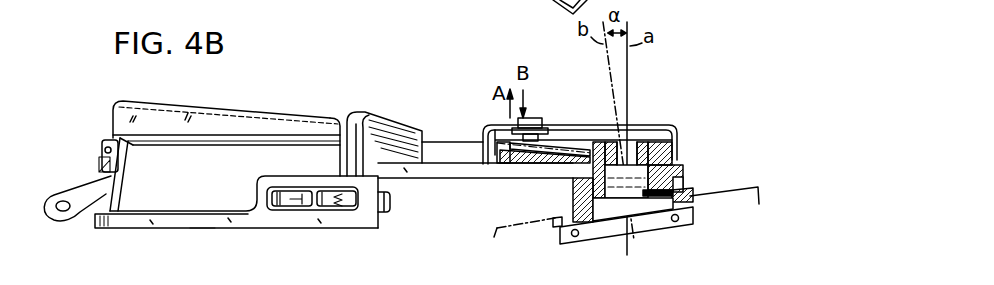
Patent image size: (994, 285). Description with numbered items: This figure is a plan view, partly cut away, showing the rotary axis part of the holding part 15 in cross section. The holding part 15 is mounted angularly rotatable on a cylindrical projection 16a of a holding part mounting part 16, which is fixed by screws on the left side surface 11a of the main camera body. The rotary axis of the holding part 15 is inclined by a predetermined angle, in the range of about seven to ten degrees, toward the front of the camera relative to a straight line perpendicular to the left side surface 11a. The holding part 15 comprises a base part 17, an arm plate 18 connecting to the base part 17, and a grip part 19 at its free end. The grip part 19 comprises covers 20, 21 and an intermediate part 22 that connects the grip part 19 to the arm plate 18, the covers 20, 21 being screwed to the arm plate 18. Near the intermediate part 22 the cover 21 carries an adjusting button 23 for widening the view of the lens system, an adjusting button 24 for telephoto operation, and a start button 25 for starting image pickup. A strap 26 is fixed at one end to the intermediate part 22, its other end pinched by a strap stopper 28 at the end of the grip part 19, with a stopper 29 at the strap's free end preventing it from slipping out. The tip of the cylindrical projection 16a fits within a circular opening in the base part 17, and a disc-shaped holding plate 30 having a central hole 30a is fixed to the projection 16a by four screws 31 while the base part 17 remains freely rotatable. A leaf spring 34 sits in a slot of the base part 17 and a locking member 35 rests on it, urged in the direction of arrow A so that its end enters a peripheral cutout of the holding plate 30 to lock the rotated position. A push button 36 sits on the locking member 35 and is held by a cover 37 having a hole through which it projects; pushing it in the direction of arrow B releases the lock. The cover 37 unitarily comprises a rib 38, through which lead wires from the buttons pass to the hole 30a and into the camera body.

The holding part 15 is at (108, 90).
The cover 20 is at (161, 146).
The strap 26 is at (262, 107).
The strap stopper 28 is at (100, 153).
The stopper 29 is at (63, 213).
The cover 21 is at (130, 226).
The grip part 19 is at (203, 231).
The adjusting button 24 is at (286, 210).
The adjusting button 23 is at (333, 210).
The start button 25 is at (391, 201).
The intermediate part 22 is at (388, 121).
The rib 38 is at (440, 142).
The arm plate 18 is at (436, 168).
The cover 37 is at (484, 127).
The locking member 35 is at (558, 130).
The push button 36 is at (536, 117).
The leaf spring 34 is at (522, 164).
The screws 31 is at (604, 142).
The central hole 30a is at (634, 140).
The holding plate 30 is at (678, 136).
The base part 17 is at (680, 171).
The cylindrical projection 16a is at (573, 200).
The holding part mounting part 16 is at (555, 223).
The left side surface 11a is at (737, 184).